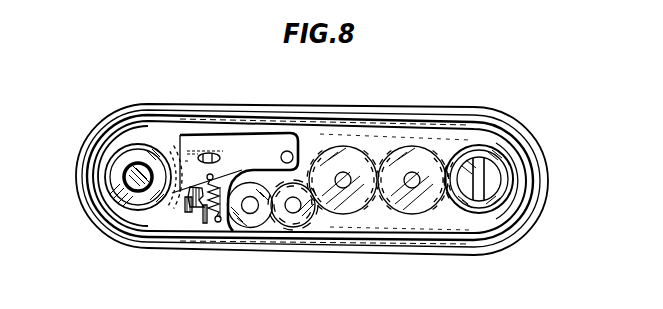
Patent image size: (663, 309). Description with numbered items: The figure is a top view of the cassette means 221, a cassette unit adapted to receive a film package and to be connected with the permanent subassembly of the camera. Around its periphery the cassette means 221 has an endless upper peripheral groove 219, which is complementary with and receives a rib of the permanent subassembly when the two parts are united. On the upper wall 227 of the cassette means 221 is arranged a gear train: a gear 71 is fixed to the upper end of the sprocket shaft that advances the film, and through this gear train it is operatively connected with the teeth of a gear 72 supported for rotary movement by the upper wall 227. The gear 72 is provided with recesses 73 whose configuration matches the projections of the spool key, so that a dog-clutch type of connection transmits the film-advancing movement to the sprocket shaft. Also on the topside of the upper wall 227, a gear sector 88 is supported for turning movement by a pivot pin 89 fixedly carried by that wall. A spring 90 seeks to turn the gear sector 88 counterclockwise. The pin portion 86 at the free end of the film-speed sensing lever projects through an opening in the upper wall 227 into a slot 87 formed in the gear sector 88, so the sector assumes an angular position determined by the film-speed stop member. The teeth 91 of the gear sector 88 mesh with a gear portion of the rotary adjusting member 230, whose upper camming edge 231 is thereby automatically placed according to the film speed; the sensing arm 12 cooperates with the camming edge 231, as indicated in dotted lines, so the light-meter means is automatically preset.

The sensing arm 12 is at (188, 209).
The gear 71 is at (250, 228).
The gear 72 is at (490, 144).
The recesses 73 is at (492, 222).
The pin portion 86 is at (215, 157).
The slot 87 is at (205, 156).
The gear sector 88 is at (250, 145).
The pivot pin 89 is at (288, 151).
The spring 90 is at (212, 187).
The teeth 91 is at (180, 136).
The endless upper peripheral groove 219 is at (539, 164).
The cassette means 221 is at (545, 197).
The upper wall 227 is at (375, 222).
The rotary adjusting member 230 is at (95, 198).
The upper camming edge 231 is at (125, 148).